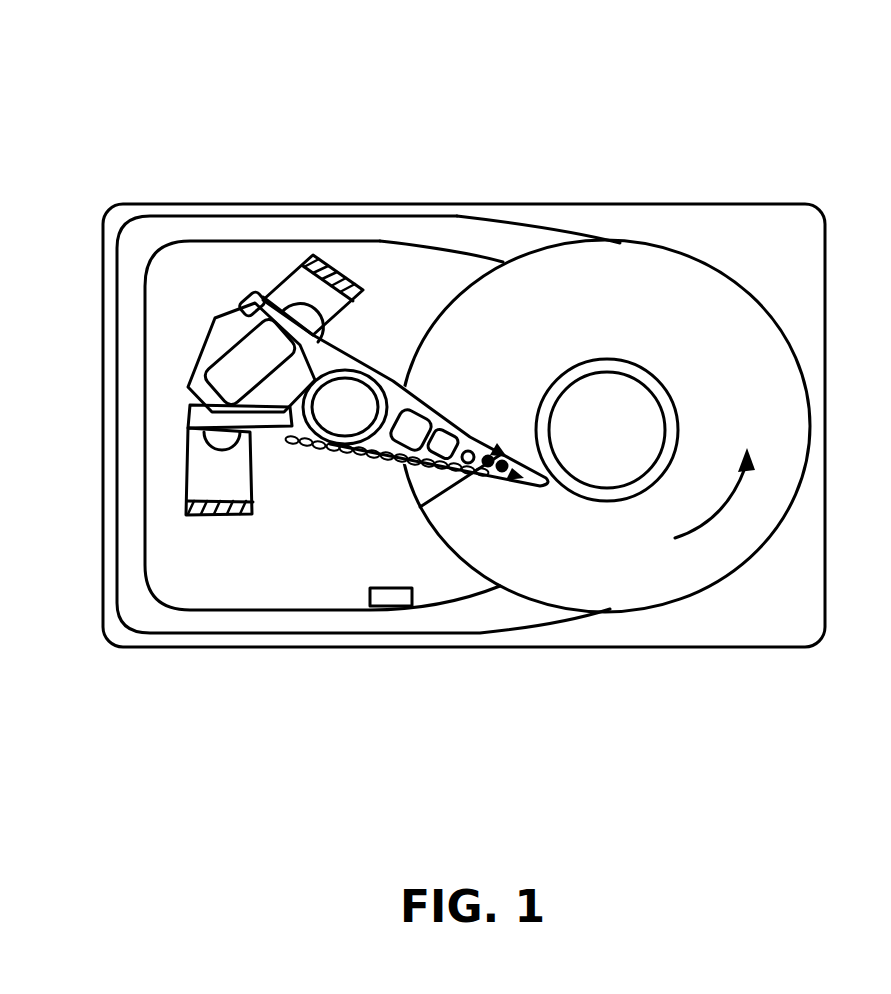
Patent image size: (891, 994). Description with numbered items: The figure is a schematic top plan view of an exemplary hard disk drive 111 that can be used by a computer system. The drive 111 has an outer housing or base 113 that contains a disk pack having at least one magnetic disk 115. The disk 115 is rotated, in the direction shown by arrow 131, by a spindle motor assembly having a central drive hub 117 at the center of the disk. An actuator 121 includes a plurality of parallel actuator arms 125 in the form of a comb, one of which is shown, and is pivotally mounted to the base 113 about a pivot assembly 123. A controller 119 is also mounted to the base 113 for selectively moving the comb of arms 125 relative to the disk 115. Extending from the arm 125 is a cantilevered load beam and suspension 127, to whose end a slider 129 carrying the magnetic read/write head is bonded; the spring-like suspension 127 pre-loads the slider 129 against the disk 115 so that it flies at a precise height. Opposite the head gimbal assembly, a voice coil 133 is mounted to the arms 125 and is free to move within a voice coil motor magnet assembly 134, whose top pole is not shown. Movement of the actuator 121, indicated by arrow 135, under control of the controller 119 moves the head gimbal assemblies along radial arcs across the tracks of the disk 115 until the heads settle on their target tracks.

The hard disk drive 111 is at (784, 108).
The outer housing or base 113 is at (658, 205).
The magnetic disk 115 is at (685, 272).
The central drive hub 117 is at (632, 360).
The controller 119 is at (396, 588).
The actuator 121 is at (364, 422).
The pivot assembly 123 is at (322, 450).
The actuator arm 125 is at (404, 386).
The load beam and suspension 127 is at (440, 418).
The slider 129 is at (530, 484).
The arrow 131 is at (712, 520).
The voice coil 133 is at (218, 320).
The voice coil motor magnet assembly 134 is at (300, 280).
The arrow 135 is at (420, 507).